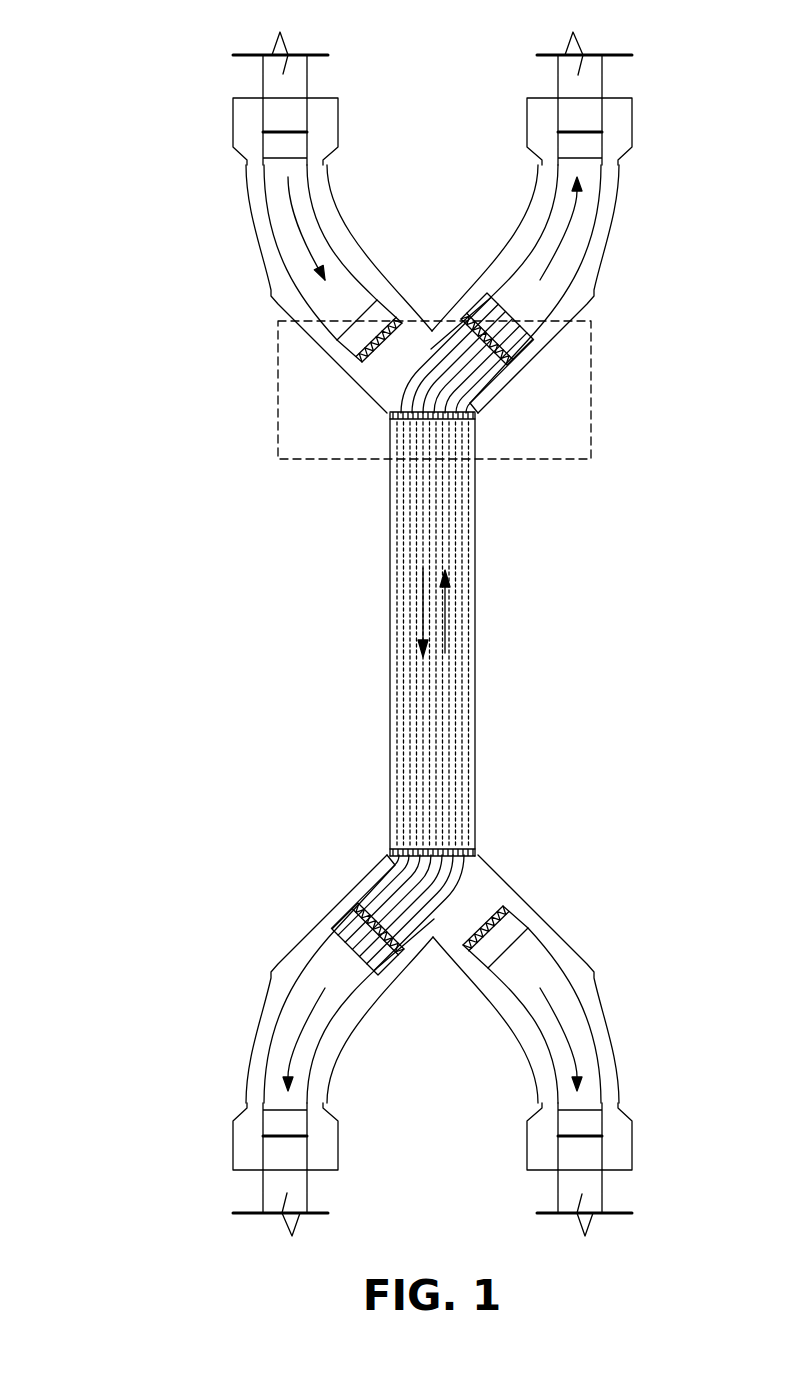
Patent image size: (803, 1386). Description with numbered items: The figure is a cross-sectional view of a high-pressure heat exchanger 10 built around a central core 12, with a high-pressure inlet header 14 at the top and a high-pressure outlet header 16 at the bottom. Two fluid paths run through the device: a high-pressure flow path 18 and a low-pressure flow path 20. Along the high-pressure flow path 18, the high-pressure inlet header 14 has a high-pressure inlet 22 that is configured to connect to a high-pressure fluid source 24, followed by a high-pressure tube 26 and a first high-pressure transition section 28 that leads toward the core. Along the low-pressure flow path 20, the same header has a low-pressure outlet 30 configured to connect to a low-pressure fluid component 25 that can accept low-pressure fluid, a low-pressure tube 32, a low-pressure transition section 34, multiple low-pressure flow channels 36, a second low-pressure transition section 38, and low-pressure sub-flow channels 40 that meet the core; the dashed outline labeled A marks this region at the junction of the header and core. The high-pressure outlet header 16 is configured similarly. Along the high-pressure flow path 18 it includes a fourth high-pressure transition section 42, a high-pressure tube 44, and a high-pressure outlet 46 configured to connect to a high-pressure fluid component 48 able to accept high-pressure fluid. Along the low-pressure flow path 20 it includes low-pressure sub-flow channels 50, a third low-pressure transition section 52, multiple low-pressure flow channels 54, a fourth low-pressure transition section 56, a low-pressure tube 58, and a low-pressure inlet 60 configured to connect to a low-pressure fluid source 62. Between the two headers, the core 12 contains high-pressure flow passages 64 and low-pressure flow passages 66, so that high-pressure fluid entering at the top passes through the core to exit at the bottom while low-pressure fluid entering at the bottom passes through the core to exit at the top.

The heat exchanger 10 is at (130, 530).
The core 12 is at (368, 590).
The high-pressure inlet header 14 is at (120, 204).
The high-pressure outlet header 16 is at (165, 1038).
The high-pressure flow path 18 is at (298, 238).
The low-pressure flow path 20 is at (567, 238).
The high-pressure inlet 22 is at (272, 108).
The high-pressure fluid source 24 is at (263, 82).
The low-pressure fluid component 25 is at (602, 82).
The high-pressure tube 26 is at (275, 183).
The first high-pressure transition section 28 is at (349, 342).
The low-pressure outlet 30 is at (593, 108).
The low-pressure tube 32 is at (567, 311).
The low-pressure transition section 34 is at (515, 347).
The multiple low-pressure flow channels 36 is at (497, 390).
The second low-pressure transition section 38 is at (470, 402).
The low-pressure sub-flow channels 40 is at (390, 416).
The fourth high-pressure transition section 42 is at (503, 925).
The high-pressure tube 44 is at (575, 1014).
The high-pressure outlet 46 is at (597, 1157).
The high-pressure fluid component 48 is at (600, 1185).
The low-pressure sub-flow channels 50 is at (390, 852).
The third low-pressure transition section 52 is at (392, 853).
The multiple low-pressure flow channels 54 is at (380, 883).
The fourth low-pressure transition section 56 is at (403, 950).
The low-pressure tube 58 is at (290, 1014).
The low-pressure inlet 60 is at (270, 1157).
The low-pressure fluid source 62 is at (265, 1185).
The high-pressure flow passages 64 is at (400, 712).
The low-pressure flow passages 66 is at (475, 577).
The detail region A is at (592, 410).